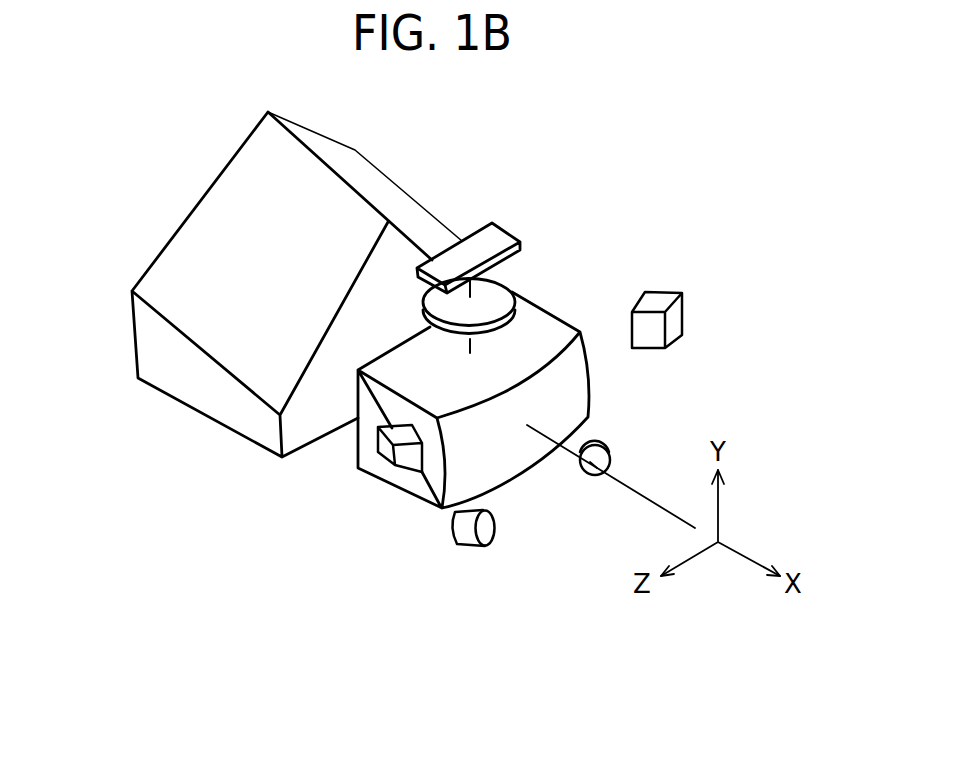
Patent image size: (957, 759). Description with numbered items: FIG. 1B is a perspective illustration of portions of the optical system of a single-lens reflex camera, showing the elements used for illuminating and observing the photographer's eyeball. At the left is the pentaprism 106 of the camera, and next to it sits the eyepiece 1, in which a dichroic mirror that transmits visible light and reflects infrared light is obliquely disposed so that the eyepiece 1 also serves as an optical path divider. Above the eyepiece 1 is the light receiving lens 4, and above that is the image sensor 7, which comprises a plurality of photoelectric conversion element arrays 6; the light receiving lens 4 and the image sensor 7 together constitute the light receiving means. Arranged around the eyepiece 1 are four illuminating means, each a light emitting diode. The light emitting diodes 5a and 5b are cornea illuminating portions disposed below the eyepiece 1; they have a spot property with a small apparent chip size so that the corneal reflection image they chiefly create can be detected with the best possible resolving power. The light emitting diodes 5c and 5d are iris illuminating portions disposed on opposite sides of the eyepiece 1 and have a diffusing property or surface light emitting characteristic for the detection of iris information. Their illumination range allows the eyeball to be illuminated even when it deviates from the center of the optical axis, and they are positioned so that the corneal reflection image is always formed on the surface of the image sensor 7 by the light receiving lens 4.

The pentaprism 106 is at (200, 198).
The eyepiece 1 is at (542, 316).
The light receiving lens 4 is at (508, 286).
The image sensor 7 is at (468, 224).
The photoelectric conversion element arrays 6 is at (485, 240).
The light emitting diode (cornea illuminating portion) 5a is at (497, 532).
The light emitting diode (cornea illuminating portion) 5b is at (600, 474).
The light emitting diode (iris illuminating portion) 5c is at (403, 465).
The light emitting diode (iris illuminating portion) 5d is at (686, 318).